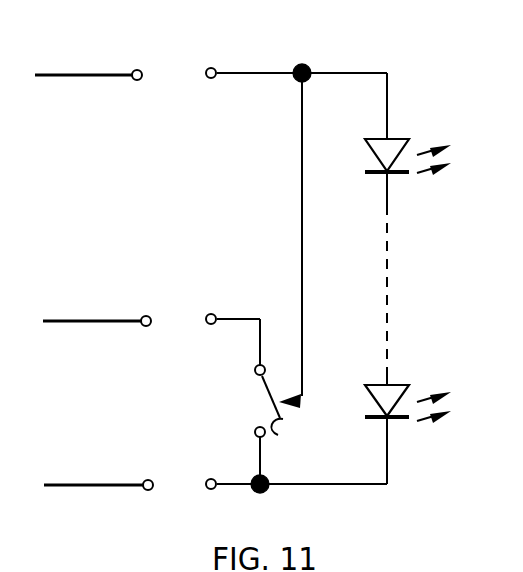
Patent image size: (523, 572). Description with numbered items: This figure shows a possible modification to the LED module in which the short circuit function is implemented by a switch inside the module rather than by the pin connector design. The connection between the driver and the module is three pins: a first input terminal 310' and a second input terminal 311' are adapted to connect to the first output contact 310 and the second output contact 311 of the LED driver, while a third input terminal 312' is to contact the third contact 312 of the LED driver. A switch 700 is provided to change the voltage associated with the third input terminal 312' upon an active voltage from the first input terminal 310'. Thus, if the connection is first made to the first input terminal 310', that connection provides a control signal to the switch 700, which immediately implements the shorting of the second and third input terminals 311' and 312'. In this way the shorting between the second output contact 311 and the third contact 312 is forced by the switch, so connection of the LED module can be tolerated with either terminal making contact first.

The first output contact 310 is at (96, 49).
The first input terminal 310' is at (209, 47).
The third contact 312 is at (100, 293).
The third input terminal 312' is at (214, 291).
The second output contact 311 is at (105, 456).
The second input terminal 311' is at (210, 455).
The switch 700 is at (278, 435).